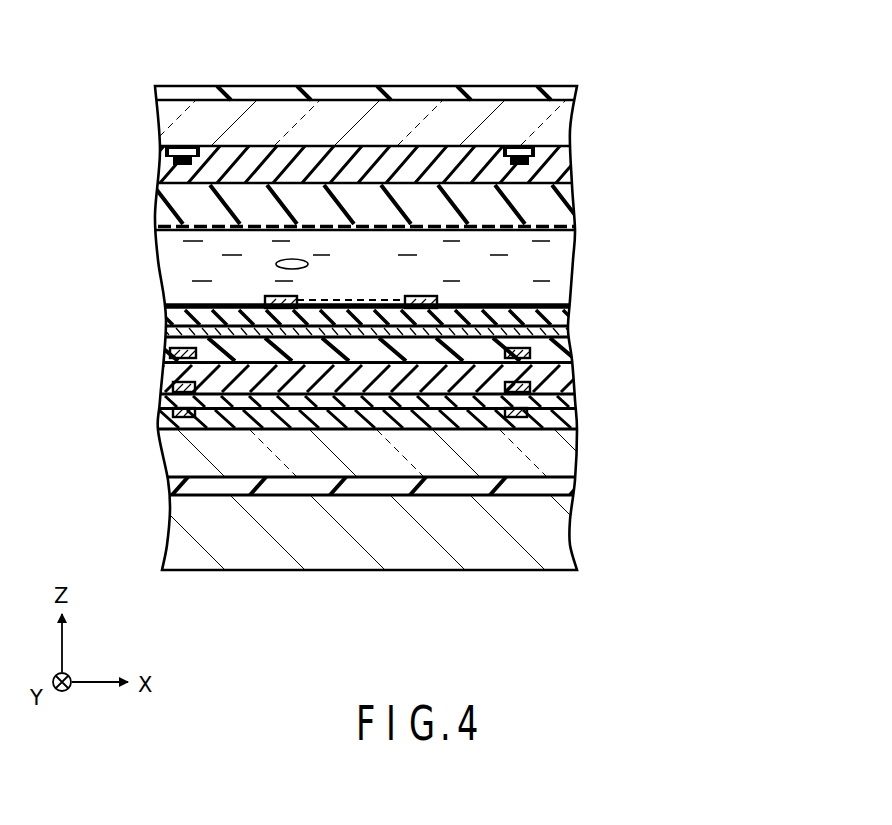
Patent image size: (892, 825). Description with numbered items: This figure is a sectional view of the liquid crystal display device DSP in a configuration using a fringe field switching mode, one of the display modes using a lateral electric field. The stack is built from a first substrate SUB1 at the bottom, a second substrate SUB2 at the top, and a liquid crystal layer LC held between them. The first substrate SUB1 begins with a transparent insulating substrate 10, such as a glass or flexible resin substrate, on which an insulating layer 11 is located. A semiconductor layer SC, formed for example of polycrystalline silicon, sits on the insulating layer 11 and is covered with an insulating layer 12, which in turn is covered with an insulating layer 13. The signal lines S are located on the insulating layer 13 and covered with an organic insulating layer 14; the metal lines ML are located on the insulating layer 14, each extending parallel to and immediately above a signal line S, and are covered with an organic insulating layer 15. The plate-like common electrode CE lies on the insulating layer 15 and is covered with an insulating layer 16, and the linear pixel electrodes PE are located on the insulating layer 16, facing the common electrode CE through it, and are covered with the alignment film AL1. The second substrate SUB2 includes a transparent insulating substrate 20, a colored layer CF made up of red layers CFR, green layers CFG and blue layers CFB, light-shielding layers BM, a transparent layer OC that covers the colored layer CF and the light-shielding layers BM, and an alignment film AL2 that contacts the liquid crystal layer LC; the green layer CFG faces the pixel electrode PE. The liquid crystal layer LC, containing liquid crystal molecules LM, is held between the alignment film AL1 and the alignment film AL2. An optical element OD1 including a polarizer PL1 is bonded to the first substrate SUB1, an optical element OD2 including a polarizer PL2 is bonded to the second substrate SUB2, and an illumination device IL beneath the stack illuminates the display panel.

The liquid crystal display device DSP is at (579, 77).
The second substrate SUB2 is at (584, 161).
The optical element OD2 is at (465, 96).
The polarizer PL2 is at (563, 93).
The insulating substrate 20 is at (562, 122).
The colored layer CF is at (153, 170).
The red layer CFR is at (168, 172).
The green layer CFG is at (367, 160).
The blue layer CFB is at (547, 156).
The light-shielding layers BM is at (190, 150).
The transparent layer OC is at (565, 204).
The alignment film AL2 is at (560, 230).
The liquid crystal layer LC is at (552, 264).
The liquid crystal molecules LM is at (276, 264).
The pixel electrodes PE is at (437, 290).
The alignment film AL1 is at (543, 306).
The insulating layer 16 is at (560, 316).
The insulating layer 15 is at (560, 332).
The common electrode CE is at (176, 328).
The first substrate SUB1 is at (584, 363).
The insulating layer 14 is at (566, 376).
The insulating layer 13 is at (567, 393).
The insulating layer 12 is at (567, 408).
The insulating layer 11 is at (567, 423).
The insulating substrate 10 is at (567, 452).
The optical element OD1 is at (442, 499).
The polarizer PL1 is at (563, 485).
The illumination device IL is at (540, 558).
The metal lines ML is at (175, 353).
The signal lines S is at (184, 393).
The semiconductor layer SC is at (190, 414).